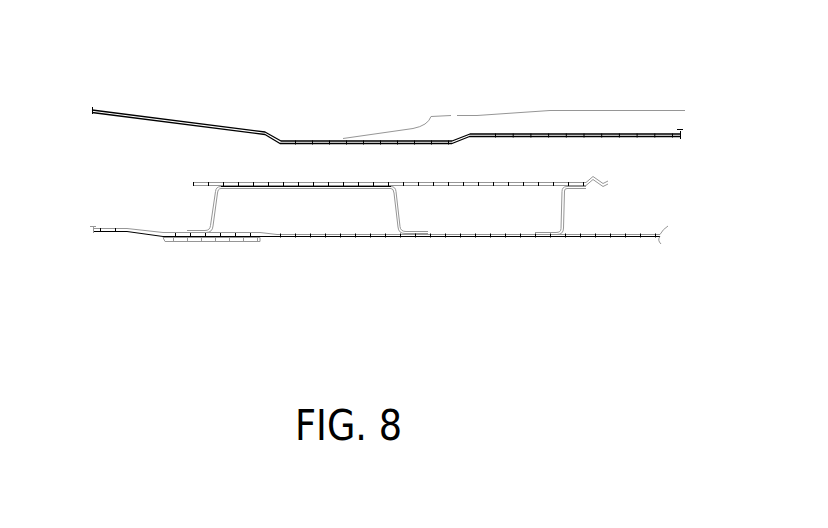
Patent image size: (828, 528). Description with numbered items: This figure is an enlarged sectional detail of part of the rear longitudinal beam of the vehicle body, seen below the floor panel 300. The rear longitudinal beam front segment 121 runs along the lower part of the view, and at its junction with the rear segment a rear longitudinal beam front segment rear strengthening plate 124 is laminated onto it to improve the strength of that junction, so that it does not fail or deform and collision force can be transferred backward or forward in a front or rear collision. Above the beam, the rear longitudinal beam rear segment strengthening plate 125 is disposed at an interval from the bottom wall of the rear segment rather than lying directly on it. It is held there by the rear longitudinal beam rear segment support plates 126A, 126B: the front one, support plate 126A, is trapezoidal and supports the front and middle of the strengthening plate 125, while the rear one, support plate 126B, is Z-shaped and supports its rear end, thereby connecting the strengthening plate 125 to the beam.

The floor panel 300 is at (182, 114).
The rear longitudinal beam rear segment strengthening plate 125 is at (472, 171).
The rear longitudinal beam front segment 121 is at (101, 237).
The rear longitudinal beam front segment rear strengthening plate 124 is at (180, 249).
The rear longitudinal beam rear segment support plate 126A is at (395, 234).
The rear longitudinal beam rear segment support plate 126B is at (559, 229).